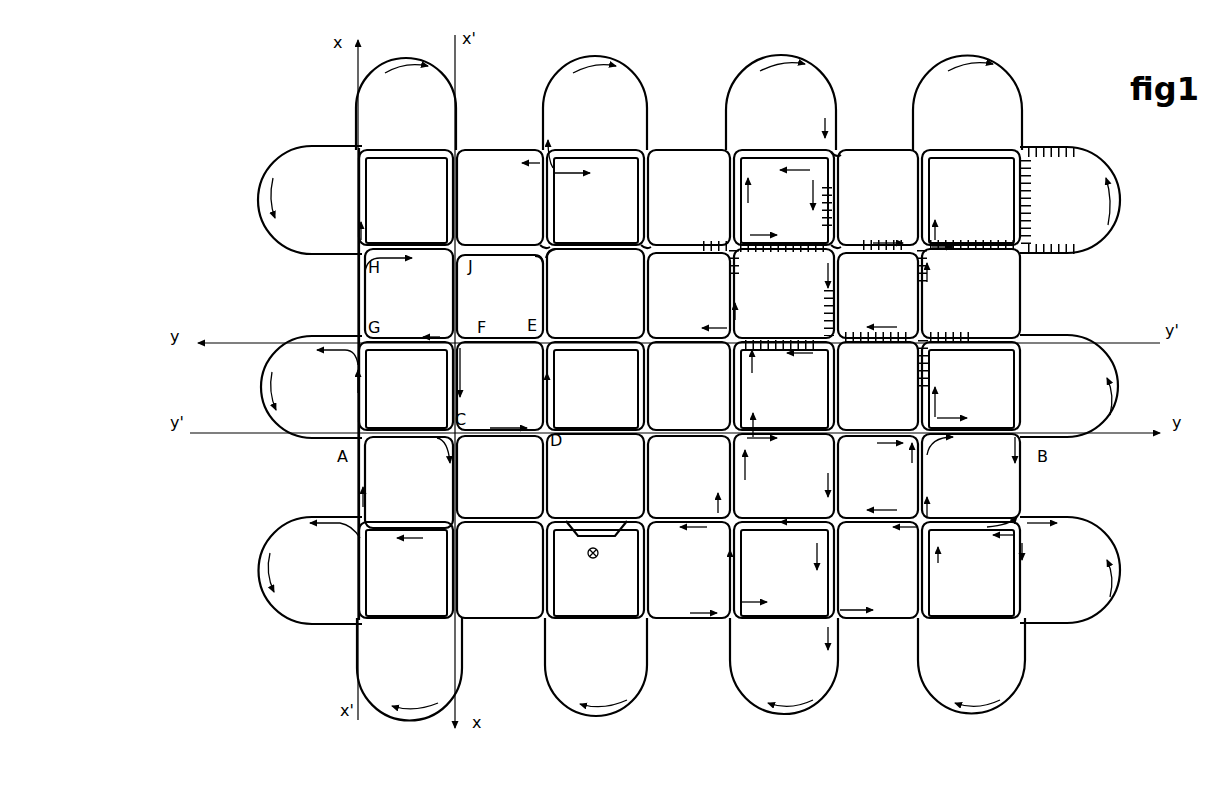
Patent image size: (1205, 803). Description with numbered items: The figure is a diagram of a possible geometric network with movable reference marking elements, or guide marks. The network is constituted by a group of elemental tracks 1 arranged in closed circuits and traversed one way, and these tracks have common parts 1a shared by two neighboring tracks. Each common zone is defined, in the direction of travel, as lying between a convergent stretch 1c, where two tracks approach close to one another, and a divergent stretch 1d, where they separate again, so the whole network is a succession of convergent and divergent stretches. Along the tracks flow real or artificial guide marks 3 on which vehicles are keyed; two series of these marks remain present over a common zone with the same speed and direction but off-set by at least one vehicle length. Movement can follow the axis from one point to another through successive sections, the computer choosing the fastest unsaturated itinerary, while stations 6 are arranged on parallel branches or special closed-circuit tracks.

The elemental track 1 is at (689, 388).
The common part 1a is at (690, 201).
The convergent stretch 1c is at (545, 260).
The divergent stretch 1d is at (550, 252).
The guide mark 3 is at (889, 271).
The station 6 is at (597, 558).